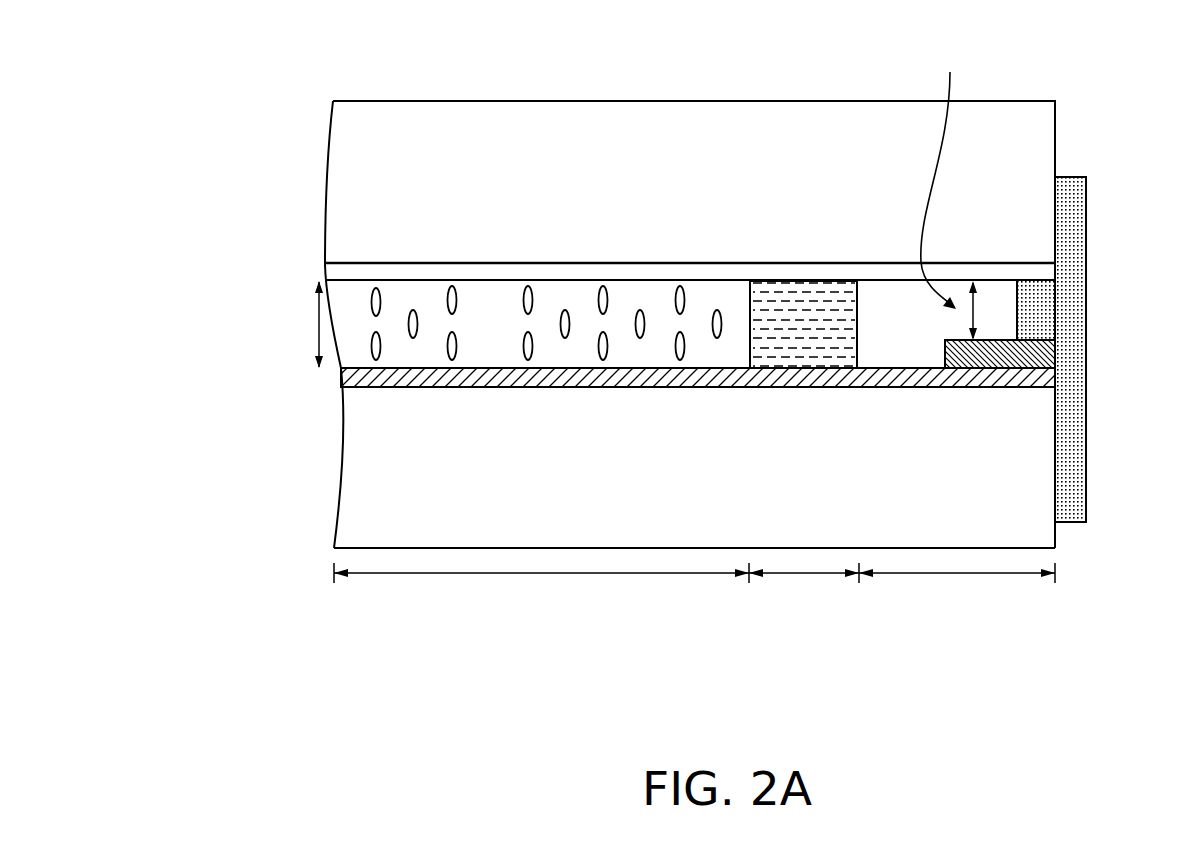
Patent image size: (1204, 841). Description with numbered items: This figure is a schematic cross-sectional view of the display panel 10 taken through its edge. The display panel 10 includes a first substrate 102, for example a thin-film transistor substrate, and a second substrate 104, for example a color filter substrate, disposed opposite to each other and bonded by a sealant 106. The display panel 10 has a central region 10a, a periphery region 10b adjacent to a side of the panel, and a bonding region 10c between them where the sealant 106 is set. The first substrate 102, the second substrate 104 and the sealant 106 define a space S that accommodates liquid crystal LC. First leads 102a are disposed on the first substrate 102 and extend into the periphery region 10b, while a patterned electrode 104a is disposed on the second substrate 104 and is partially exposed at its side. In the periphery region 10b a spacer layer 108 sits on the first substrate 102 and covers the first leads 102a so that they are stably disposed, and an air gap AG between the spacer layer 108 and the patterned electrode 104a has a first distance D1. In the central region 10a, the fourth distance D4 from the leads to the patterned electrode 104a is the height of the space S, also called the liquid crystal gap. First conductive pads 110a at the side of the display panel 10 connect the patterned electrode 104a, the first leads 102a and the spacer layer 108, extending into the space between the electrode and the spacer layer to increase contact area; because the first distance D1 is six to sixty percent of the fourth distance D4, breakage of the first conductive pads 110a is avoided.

The display panel 10 is at (702, 357).
The central region 10a is at (541, 588).
The periphery region 10b is at (957, 587).
The bonding region 10c is at (804, 587).
The first substrate 102 is at (356, 467).
The first leads 102a is at (353, 371).
The second substrate 104 is at (337, 182).
The patterned electrode 104a is at (338, 272).
The sealant 106 is at (808, 292).
The spacer layer 108 is at (1050, 352).
The first conductive pads 110a is at (1072, 229).
The liquid crystal LC is at (377, 300).
The space S is at (480, 339).
The air gap AG is at (943, 172).
The first distance D1 is at (990, 310).
The fourth distance D4 is at (301, 324).